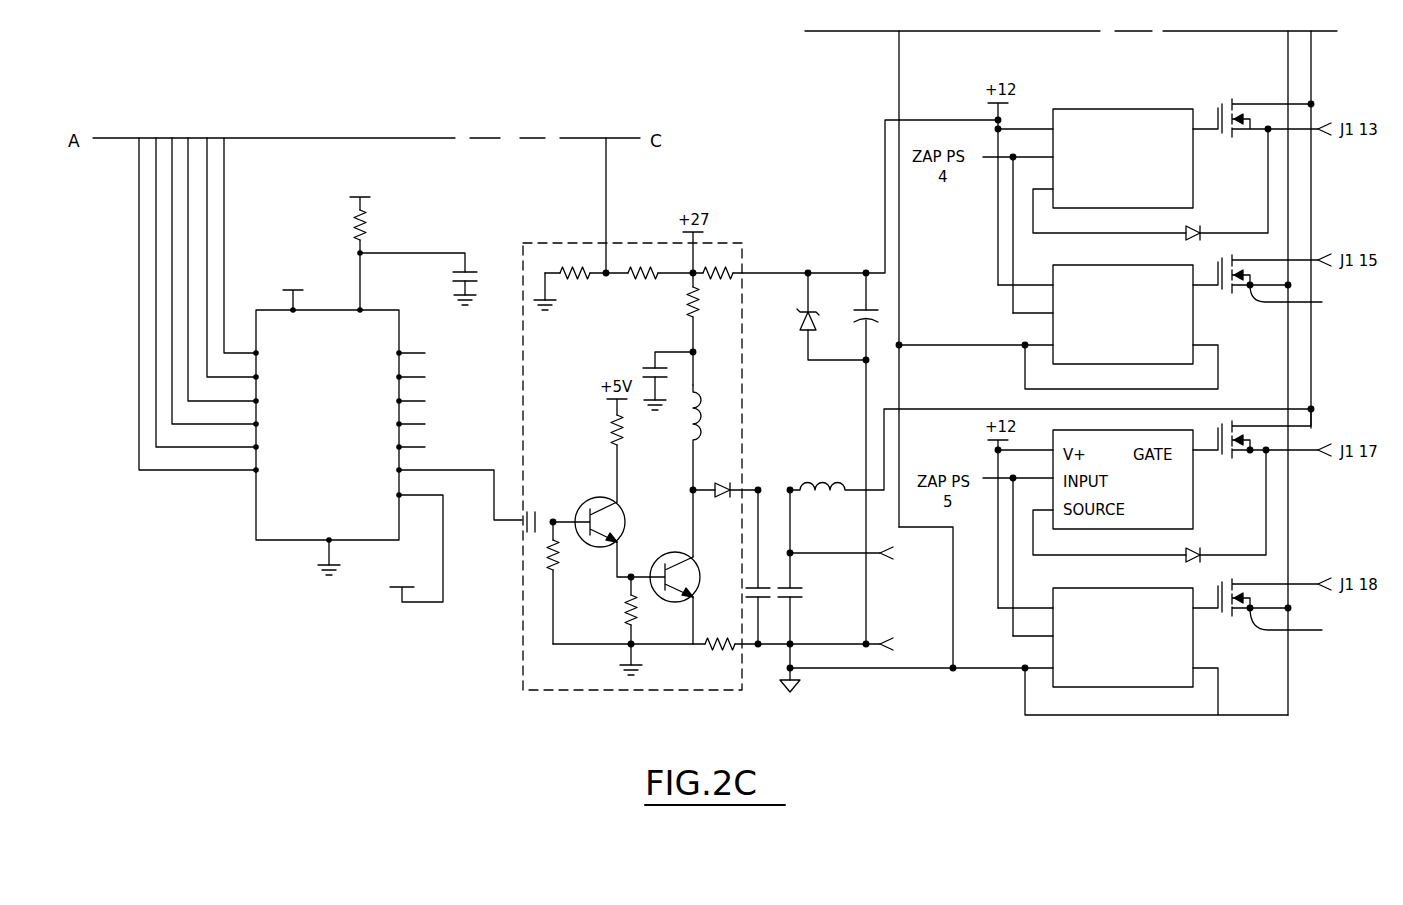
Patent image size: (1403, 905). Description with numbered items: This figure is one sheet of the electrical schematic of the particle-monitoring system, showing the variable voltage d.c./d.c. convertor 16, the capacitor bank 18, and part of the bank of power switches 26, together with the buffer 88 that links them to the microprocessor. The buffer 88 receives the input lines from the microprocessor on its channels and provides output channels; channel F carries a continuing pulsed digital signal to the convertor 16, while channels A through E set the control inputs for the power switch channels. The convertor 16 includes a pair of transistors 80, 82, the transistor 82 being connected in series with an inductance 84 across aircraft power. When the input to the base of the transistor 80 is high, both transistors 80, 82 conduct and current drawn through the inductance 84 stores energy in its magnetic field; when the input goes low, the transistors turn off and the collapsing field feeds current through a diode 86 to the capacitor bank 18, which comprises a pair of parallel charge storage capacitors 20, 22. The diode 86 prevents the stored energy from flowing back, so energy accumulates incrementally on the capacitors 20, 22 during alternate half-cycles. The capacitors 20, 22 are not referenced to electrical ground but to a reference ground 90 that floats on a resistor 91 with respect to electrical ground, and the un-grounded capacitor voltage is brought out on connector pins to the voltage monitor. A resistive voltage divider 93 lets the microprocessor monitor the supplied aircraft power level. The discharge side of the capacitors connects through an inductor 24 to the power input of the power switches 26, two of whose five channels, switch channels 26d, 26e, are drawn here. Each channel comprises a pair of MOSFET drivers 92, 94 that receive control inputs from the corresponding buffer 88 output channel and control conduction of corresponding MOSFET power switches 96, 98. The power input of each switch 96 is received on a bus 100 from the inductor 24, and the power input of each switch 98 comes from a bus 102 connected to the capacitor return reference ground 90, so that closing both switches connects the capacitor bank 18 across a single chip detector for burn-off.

The variable voltage d.c./d.c. convertor 16 is at (570, 682).
The capacitor bank 18 is at (842, 585).
The charge storage capacitor 20 is at (768, 590).
The charge storage capacitor 22 is at (800, 602).
The inductor 24 is at (824, 486).
The power switches 26 is at (1027, 50).
The switch channel 26d is at (1328, 117).
The switch channel 26e is at (1330, 433).
The transistor 80 is at (582, 503).
The transistor 82 is at (664, 556).
The inductance 84 is at (704, 410).
The diode 86 is at (738, 478).
The buffer 88 is at (262, 544).
The reference ground 90 is at (798, 688).
The resistor 91 is at (722, 655).
The MOSFET driver 92 is at (1098, 112).
The resistive voltage divider 93 is at (637, 290).
The MOSFET driver 94 is at (1196, 334).
The MOSFET power switch 96 is at (1220, 104).
The MOSFET power switch 98 is at (1306, 464).
The bus 100 is at (1312, 184).
The bus 102 is at (1290, 234).